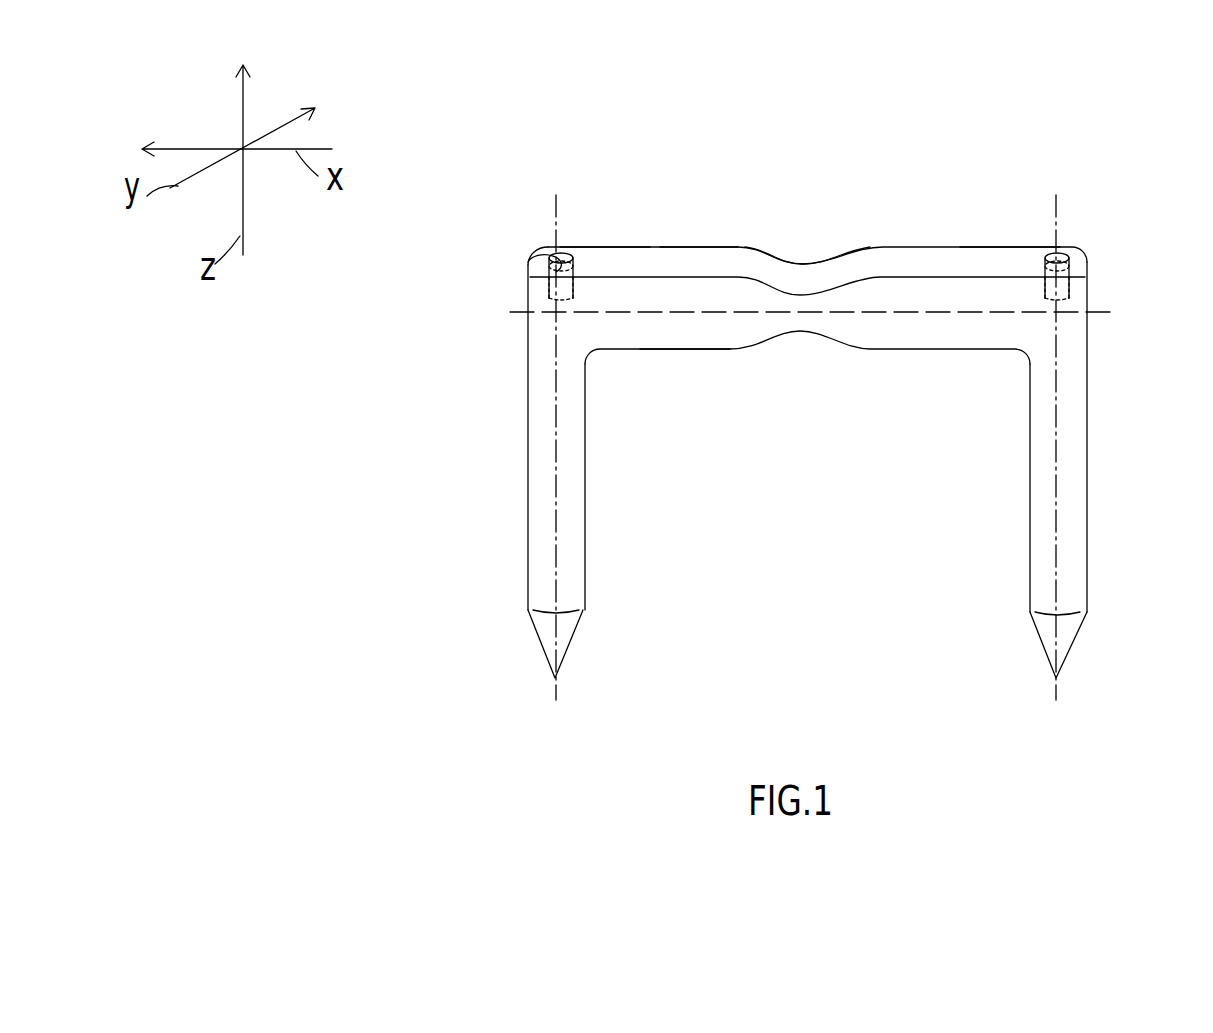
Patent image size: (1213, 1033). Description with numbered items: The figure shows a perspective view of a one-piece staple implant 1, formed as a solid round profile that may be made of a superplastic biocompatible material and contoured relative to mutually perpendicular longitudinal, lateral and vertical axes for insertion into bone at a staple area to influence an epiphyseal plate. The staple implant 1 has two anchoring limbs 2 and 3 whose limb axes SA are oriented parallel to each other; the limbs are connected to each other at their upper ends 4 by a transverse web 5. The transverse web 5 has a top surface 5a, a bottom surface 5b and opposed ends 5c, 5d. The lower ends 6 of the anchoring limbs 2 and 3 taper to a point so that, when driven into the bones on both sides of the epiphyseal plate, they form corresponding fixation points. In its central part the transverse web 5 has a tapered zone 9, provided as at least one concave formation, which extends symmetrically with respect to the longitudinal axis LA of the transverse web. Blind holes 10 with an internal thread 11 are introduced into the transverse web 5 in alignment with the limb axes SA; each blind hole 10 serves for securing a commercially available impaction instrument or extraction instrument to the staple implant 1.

The staple implant 1 is at (1037, 189).
The anchoring limb 2 is at (526, 497).
The anchoring limb 3 is at (1085, 503).
The upper ends 4 is at (532, 272).
The transverse web 5 is at (641, 258).
The top surface 5a is at (695, 262).
The bottom surface 5b is at (707, 350).
The end 5c is at (598, 262).
The end 5d is at (1010, 262).
The lower ends 6 is at (553, 678).
The tapered zone 9 is at (803, 265).
The blind holes 10 is at (548, 262).
The internal thread 11 is at (548, 278).
The limb axes SA is at (1145, 565).
The longitudinal axis LA is at (640, 310).